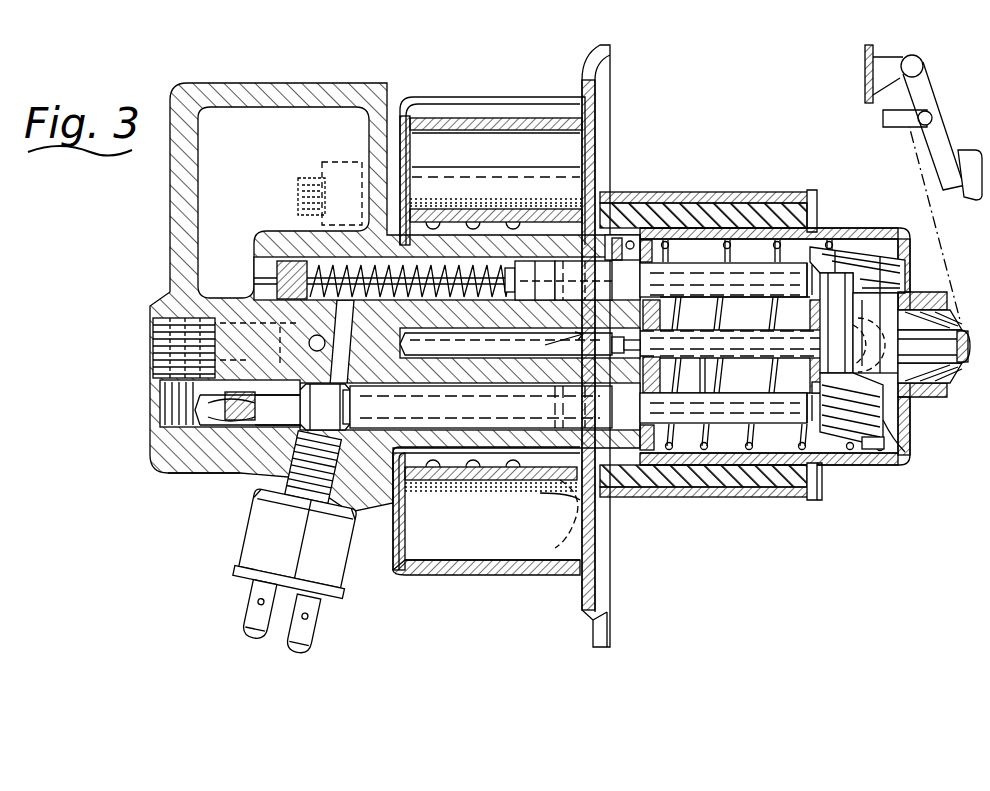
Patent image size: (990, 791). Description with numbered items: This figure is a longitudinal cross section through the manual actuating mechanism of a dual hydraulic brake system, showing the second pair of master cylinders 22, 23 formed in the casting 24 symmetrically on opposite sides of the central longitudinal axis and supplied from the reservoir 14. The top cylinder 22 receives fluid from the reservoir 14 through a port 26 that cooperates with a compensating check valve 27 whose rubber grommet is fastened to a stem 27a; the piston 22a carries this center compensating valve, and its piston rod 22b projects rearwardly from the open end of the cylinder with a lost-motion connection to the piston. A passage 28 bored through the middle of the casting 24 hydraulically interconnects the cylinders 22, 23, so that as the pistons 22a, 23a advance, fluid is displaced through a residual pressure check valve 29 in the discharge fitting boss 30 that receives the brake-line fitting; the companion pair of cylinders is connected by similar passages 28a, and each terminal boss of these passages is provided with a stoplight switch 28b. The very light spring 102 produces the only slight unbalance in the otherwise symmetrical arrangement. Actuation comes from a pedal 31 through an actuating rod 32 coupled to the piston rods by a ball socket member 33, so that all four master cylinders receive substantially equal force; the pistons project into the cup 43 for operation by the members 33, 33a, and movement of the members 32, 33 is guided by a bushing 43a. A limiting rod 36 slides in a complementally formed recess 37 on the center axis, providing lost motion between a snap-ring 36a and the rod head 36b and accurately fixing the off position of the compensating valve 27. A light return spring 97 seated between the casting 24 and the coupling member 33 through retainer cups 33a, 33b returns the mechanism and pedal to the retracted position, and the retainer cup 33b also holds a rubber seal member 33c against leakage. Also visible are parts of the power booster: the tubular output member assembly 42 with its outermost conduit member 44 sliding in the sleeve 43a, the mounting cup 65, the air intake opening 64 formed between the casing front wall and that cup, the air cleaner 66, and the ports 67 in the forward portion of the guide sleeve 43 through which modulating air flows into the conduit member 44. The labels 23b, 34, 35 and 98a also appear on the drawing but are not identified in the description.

The reservoir 14 is at (268, 164).
The master cylinder 22 is at (514, 261).
The piston 22a is at (575, 200).
The piston rod 22b is at (719, 190).
The master cylinder 23 is at (455, 432).
The piston 23a is at (546, 450).
The second solenoid coil 23b is at (720, 490).
The casting 24 is at (180, 474).
The port 26 is at (262, 282).
The compensating check valve 27 is at (270, 296).
The stem 27a is at (478, 244).
The passage 28 is at (477, 407).
The passages 28a is at (352, 422).
The stoplight switch 28b is at (252, 548).
The residual pressure check valve 29 is at (240, 450).
The discharge fitting boss 30 is at (152, 455).
The pedal 31 is at (968, 160).
The actuating rod 32 is at (897, 128).
The ball socket member 33 is at (857, 310).
The retainer cup 33a is at (870, 452).
The retainer cup 33b is at (625, 238).
The rubber seal member 33c is at (750, 388).
The gear 34 is at (918, 296).
The conical end 35 is at (905, 412).
The limiting rod 36 is at (752, 348).
The snap-ring 36a is at (624, 346).
The rod head 36b is at (810, 366).
The recess 37 is at (555, 345).
The tubular output member assembly 42 is at (831, 480).
The guide sleeve 43 is at (650, 498).
The bushing 43a is at (801, 184).
The conduit member 44 is at (845, 232).
The opening 64 is at (567, 545).
The mounting cup 65 is at (426, 574).
The air cleaner 66 is at (446, 496).
The ports 67 is at (502, 496).
The return spring 97 is at (665, 486).
The brush holder 98a is at (953, 482).
The spring 102 is at (424, 330).